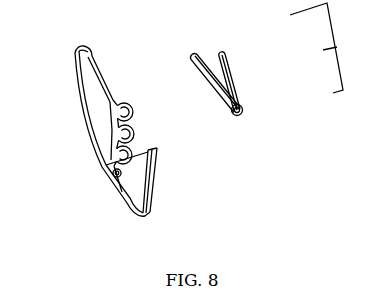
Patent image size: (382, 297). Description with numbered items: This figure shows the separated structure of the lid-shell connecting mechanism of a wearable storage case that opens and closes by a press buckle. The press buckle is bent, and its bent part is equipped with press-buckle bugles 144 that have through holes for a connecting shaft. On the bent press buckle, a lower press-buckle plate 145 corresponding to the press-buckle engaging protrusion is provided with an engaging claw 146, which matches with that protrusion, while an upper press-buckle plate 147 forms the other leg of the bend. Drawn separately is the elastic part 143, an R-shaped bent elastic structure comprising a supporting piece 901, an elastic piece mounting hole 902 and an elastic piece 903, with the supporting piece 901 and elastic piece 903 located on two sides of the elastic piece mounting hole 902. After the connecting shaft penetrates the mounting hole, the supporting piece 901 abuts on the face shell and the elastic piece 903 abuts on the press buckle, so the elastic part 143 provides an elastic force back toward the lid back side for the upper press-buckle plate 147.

The elastic part 143 is at (328, 48).
The press-buckle bugles 144 is at (110, 173).
The lower press-buckle plate 145 is at (138, 172).
The engaging claw 146 is at (147, 212).
The upper press-buckle plate 147 is at (100, 97).
The supporting piece 901 is at (230, 82).
The elastic piece mounting hole 902 is at (243, 106).
The elastic piece 903 is at (224, 60).